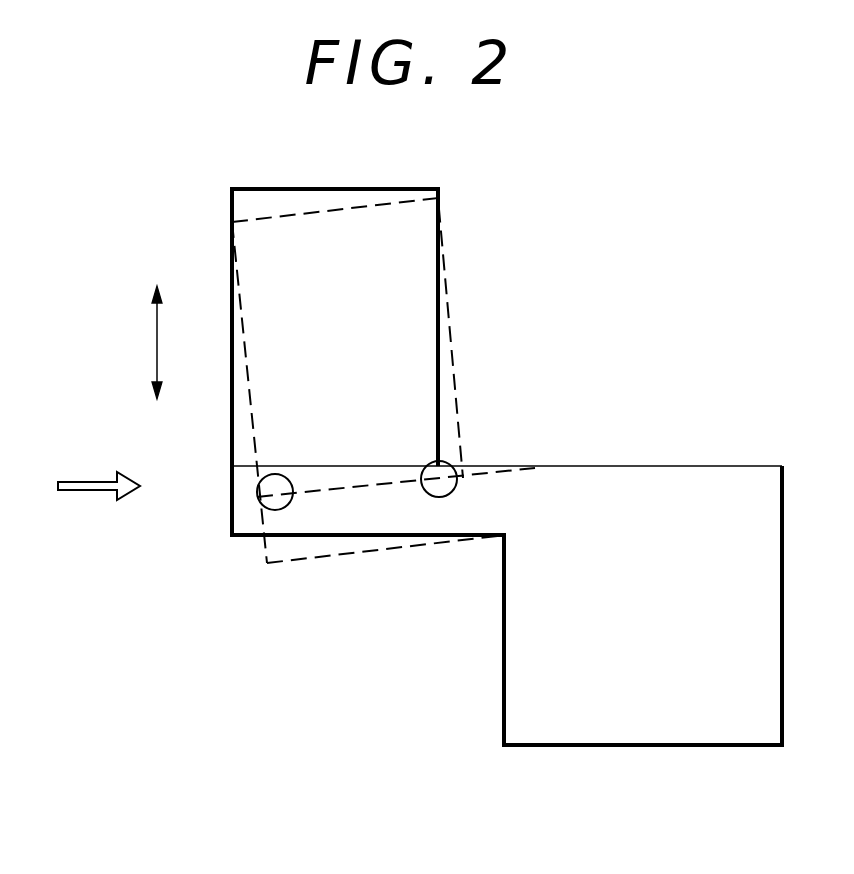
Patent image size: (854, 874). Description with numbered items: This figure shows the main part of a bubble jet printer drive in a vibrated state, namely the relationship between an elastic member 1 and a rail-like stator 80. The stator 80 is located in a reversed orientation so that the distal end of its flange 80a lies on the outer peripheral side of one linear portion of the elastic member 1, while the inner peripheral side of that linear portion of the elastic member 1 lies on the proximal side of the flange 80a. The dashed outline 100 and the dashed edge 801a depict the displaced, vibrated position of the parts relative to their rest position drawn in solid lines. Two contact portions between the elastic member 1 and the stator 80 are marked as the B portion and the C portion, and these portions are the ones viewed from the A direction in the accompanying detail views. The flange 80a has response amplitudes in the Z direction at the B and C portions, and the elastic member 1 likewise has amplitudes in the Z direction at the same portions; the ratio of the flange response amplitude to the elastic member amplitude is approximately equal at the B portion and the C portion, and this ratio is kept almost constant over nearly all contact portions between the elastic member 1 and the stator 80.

The elastic member 1 is at (343, 189).
The tilted cassette position 100 is at (455, 372).
The rail-like stator 80 is at (627, 735).
The flange 80a is at (230, 513).
The tilted bottom edge 801a is at (292, 565).
The B portion B is at (266, 483).
The C portion C is at (456, 486).
The Z direction Z is at (146, 342).
The A direction A is at (64, 475).